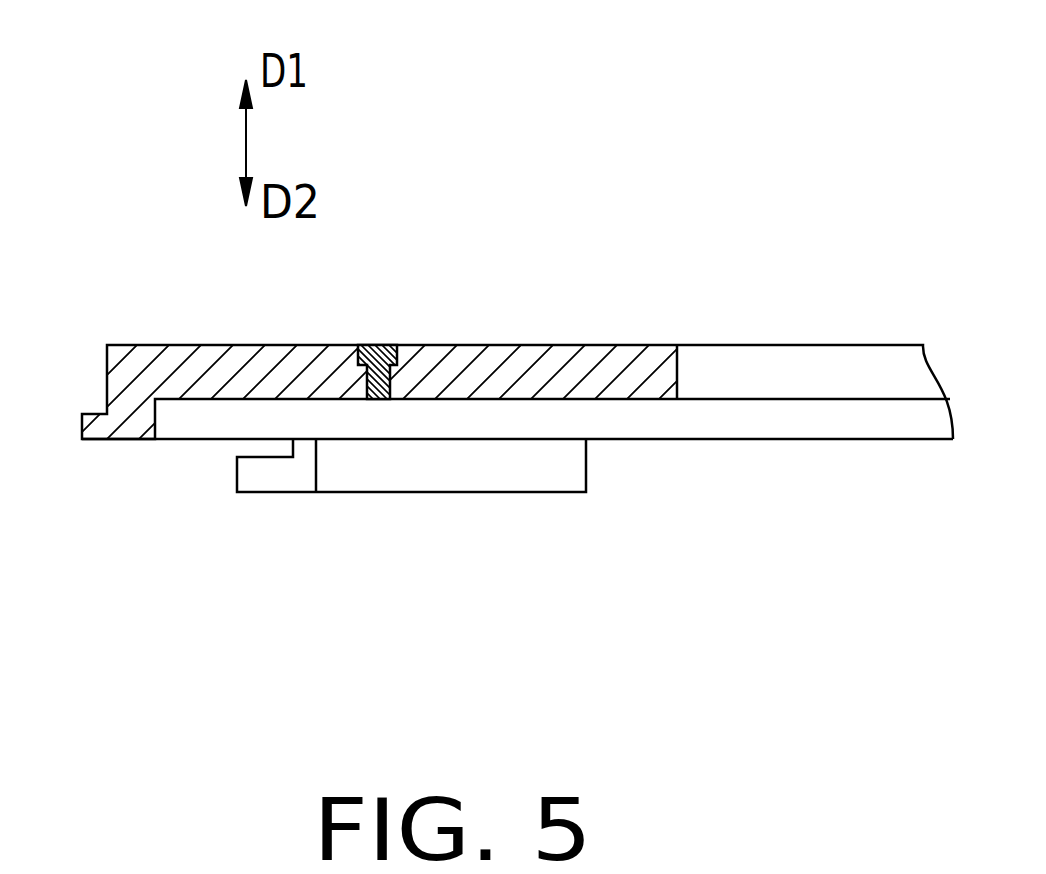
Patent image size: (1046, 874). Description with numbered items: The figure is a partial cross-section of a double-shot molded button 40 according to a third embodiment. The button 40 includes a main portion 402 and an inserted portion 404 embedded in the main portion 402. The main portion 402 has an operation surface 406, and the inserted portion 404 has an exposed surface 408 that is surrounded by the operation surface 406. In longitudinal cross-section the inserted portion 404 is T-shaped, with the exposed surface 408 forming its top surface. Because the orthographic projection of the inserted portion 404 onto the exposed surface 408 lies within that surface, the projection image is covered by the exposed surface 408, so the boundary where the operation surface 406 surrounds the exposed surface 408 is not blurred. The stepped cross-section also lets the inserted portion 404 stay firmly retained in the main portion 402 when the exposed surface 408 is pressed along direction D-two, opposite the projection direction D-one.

The double-shot molded button 40 is at (473, 66).
The main portion 402 is at (235, 358).
The inserted portion 404 is at (376, 388).
The operation surface 406 is at (575, 345).
The exposed surface 408 is at (382, 345).